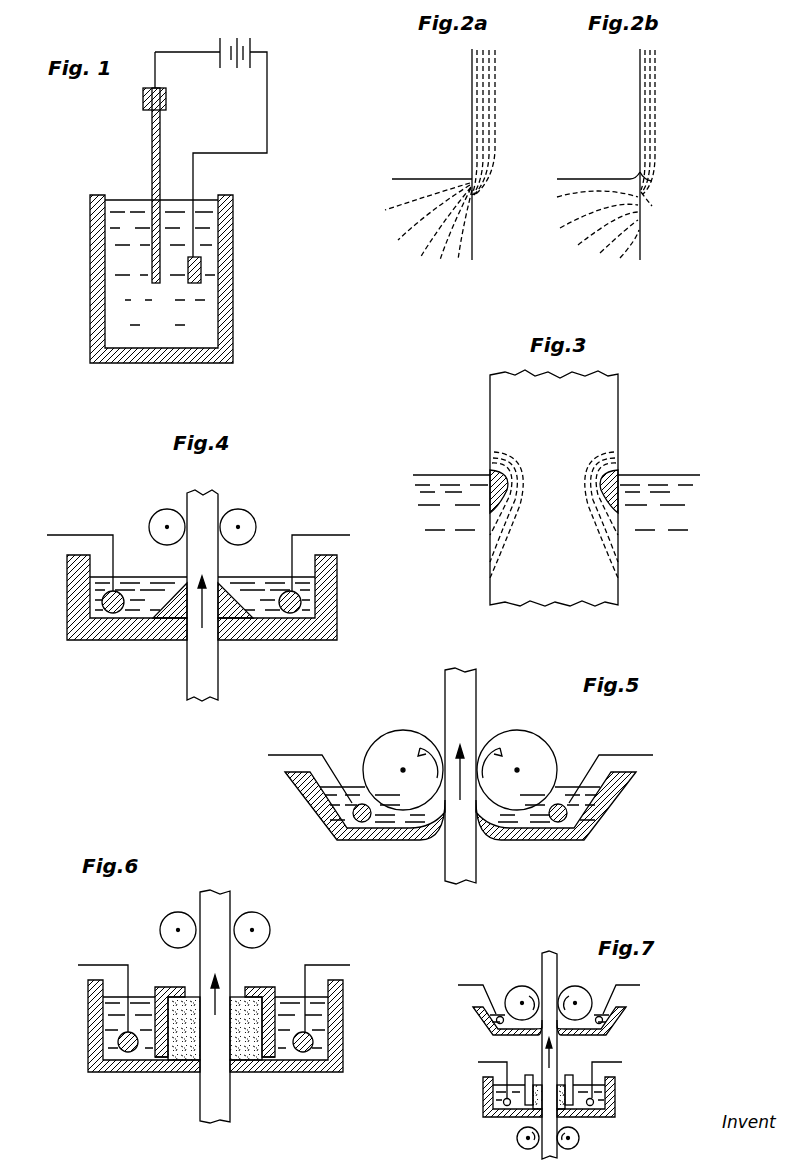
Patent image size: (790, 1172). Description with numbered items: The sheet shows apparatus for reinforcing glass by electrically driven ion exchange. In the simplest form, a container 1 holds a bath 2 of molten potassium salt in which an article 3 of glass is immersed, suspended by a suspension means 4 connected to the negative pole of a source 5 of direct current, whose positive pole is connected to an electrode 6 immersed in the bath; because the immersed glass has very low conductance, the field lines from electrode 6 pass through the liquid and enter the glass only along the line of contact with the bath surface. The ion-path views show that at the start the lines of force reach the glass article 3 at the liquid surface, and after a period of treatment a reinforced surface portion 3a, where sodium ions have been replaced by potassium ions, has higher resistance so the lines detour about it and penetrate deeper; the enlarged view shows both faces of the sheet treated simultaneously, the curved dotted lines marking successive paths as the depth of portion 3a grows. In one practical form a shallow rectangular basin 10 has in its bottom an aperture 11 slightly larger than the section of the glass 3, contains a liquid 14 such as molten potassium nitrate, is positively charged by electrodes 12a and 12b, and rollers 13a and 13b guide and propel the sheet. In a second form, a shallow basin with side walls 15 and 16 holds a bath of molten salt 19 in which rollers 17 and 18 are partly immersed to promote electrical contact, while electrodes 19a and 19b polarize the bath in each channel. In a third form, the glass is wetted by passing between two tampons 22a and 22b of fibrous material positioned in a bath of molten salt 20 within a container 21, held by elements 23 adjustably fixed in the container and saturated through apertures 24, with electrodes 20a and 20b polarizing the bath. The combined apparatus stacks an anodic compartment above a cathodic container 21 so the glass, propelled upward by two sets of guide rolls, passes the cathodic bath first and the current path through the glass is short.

In FIG. 1, the container 1 is at (226, 302).
In FIG. 1, the bath of molten potassium salt 2 is at (206, 324).
In FIG. 2A, the bath of molten potassium salt 2 is at (412, 200).
In FIG. 2B, the bath of molten potassium salt 2 is at (590, 200).
In FIG. 3, the bath of molten potassium salt 2 is at (443, 495).
In FIG. 1, the article of glass 3 is at (152, 150).
In FIG. 2A, the article of glass 3 is at (488, 104).
In FIG. 2B, the article of glass 3 is at (648, 98).
In FIG. 3, the article of glass 3 is at (608, 416).
In FIG. 4, the article of glass 3 is at (200, 658).
In FIG. 5, the article of glass 3 is at (470, 692).
In FIG. 6, the article of glass 3 is at (222, 912).
In FIG. 7, the article of glass 3 is at (552, 968).
In FIG. 2B, the reinforced surface portion 3a is at (650, 181).
In FIG. 3, the reinforced surface portion 3a is at (490, 474).
In FIG. 1, the suspension means 4 is at (166, 95).
In FIG. 1, the source of direct current 5 is at (211, 133).
In FIG. 1, the electrode 6 is at (201, 268).
In FIG. 4, the shallow rectangular basin 10 is at (175, 630).
In FIG. 4, the aperture 11 is at (221, 632).
In FIG. 4, the electrode 12a is at (108, 615).
In FIG. 4, the electrode 12b is at (288, 615).
In FIG. 4, the roller 13a is at (166, 515).
In FIG. 4, the roller 13b is at (245, 518).
In FIG. 4, the liquid 14 is at (135, 585).
In FIG. 5, the side wall 15 is at (330, 822).
In FIG. 5, the side wall 16 is at (605, 802).
In FIG. 7, the side wall 16 is at (620, 1020).
In FIG. 5, the roller 17 is at (400, 738).
In FIG. 7, the roller 17 is at (512, 992).
In FIG. 5, the roller 18 is at (530, 745).
In FIG. 7, the roller 18 is at (580, 992).
In FIG. 5, the bath of molten salt 19 is at (412, 838).
In FIG. 5, the electrode 19a is at (357, 835).
In FIG. 5, the electrode 19b is at (581, 835).
In FIG. 6, the bath of molten salt 20 is at (102, 1020).
In FIG. 6, the electrode 20a is at (120, 1060).
In FIG. 6, the electrode 20b is at (303, 1062).
In FIG. 6, the container 21 is at (340, 1026).
In FIG. 7, the container 21 is at (483, 1100).
In FIG. 6, the tampon 22a is at (188, 1062).
In FIG. 7, the tampon 22a is at (536, 1112).
In FIG. 6, the tampon 22b is at (245, 1065).
In FIG. 7, the tampon 22b is at (563, 1112).
In FIG. 6, the elements 23 is at (165, 986).
In FIG. 7, the elements 23 is at (528, 1075).
In FIG. 6, the apertures 24 is at (282, 1025).